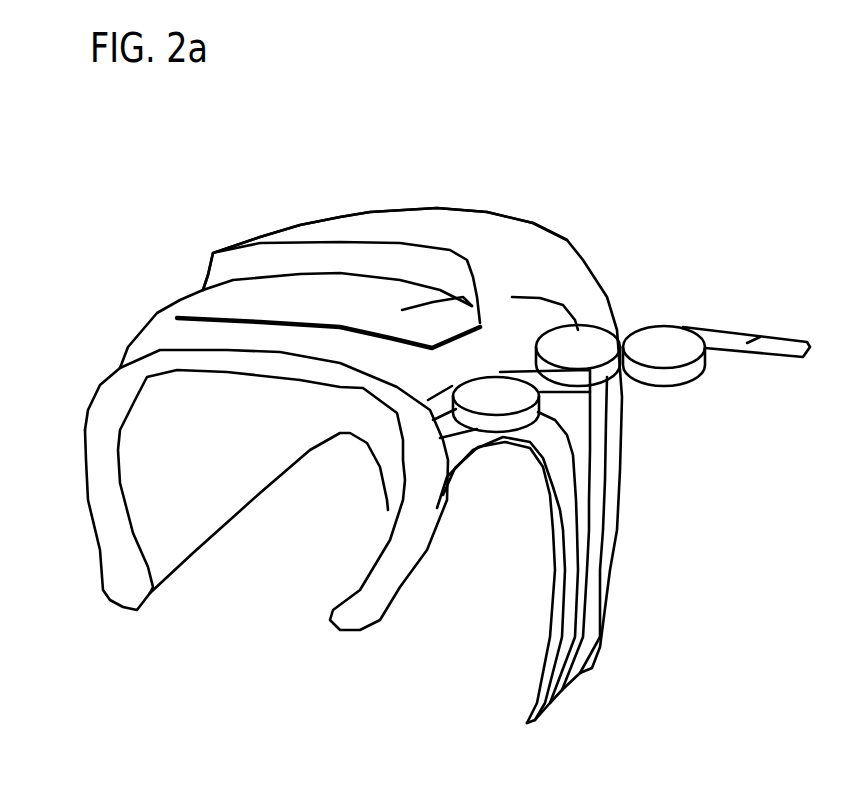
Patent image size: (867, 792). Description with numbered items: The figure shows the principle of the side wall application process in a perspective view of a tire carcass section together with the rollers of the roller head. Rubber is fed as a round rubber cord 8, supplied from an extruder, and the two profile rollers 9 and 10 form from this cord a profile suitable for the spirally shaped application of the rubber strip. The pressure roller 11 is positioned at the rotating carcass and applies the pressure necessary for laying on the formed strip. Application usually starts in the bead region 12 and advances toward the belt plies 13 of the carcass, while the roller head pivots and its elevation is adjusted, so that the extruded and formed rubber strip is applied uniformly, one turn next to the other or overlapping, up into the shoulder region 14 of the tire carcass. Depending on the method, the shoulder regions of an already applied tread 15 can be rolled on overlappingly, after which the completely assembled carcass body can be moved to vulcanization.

The round rubber cord 8 is at (746, 302).
The profile roller 9 is at (606, 436).
The profile roller 10 is at (689, 412).
The pressure roller 11 is at (496, 488).
The bead region 12 is at (85, 516).
The belt plies 13 is at (411, 266).
The shoulder region 14 is at (624, 275).
The tread 15 is at (385, 202).